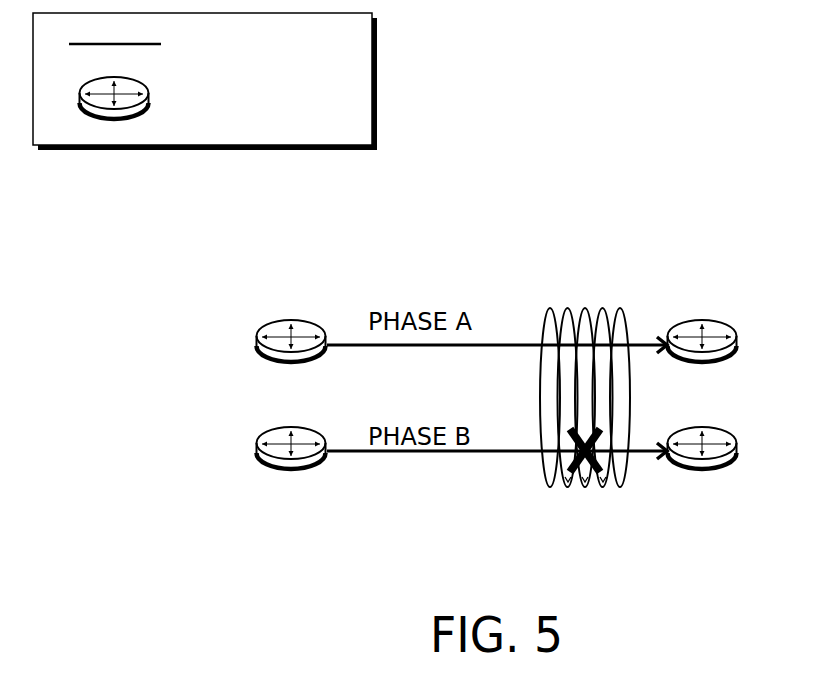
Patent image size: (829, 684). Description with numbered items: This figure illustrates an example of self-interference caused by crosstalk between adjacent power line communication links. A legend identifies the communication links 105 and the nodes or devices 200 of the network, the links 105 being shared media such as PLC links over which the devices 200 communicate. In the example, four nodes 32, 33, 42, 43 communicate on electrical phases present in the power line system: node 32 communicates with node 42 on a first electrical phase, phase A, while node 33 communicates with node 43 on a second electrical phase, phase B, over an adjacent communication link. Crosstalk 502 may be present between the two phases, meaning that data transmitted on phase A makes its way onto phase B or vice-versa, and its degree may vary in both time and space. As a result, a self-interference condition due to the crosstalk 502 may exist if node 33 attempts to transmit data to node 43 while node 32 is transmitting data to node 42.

The links 105 is at (191, 44).
The nodes/devices 200 is at (206, 98).
The node 32 is at (291, 364).
The node 33 is at (291, 470).
The node 42 is at (702, 364).
The node 43 is at (702, 470).
The crosstalk 502 is at (637, 287).